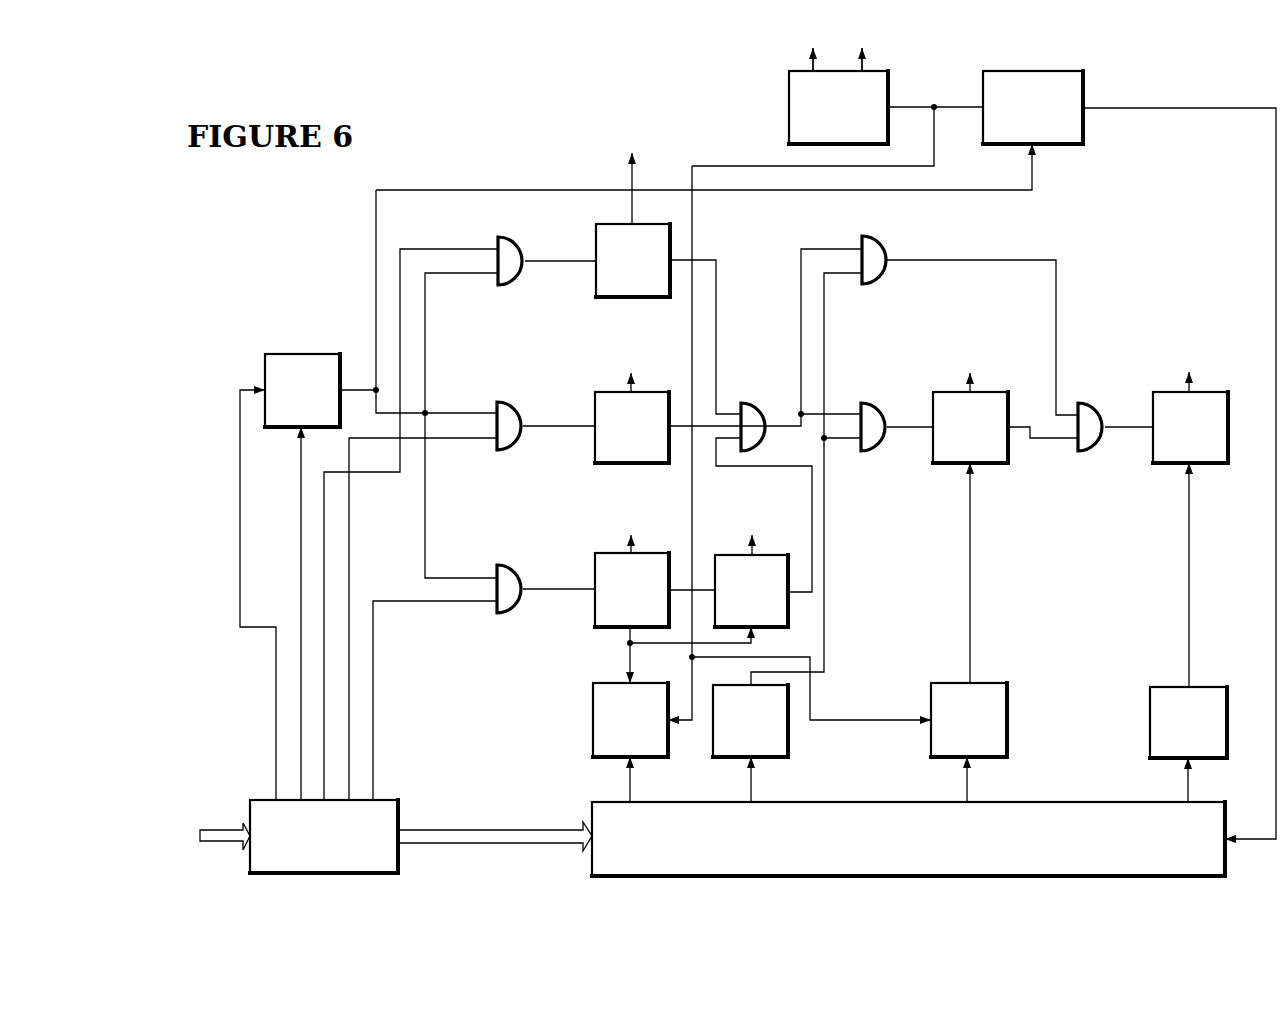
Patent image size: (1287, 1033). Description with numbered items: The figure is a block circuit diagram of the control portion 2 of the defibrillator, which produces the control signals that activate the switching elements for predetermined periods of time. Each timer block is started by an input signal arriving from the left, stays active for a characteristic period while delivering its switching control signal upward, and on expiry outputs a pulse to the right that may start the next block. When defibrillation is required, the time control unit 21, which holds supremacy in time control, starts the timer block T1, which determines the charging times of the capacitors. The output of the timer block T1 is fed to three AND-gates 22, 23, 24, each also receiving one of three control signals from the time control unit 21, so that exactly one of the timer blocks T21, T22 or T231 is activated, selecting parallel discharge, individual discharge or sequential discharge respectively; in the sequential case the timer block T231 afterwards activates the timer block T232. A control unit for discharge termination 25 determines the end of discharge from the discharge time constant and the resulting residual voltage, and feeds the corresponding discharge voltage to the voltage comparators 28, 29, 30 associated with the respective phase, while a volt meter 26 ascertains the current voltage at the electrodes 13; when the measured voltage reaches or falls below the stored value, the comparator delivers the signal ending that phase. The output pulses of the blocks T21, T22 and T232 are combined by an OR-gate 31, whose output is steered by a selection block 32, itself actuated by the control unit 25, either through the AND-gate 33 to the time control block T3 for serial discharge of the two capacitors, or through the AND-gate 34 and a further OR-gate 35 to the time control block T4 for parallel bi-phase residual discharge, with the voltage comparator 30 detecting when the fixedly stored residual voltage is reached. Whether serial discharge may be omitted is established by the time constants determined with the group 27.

The control portion 2 is at (456, 68).
The electrodes 13 is at (837, 51).
The time control unit 21 is at (250, 808).
The AND-gate 22 is at (510, 287).
The AND-gate 23 is at (508, 402).
The AND-gate 24 is at (508, 565).
The control unit for discharge termination 25 is at (593, 812).
The volt meter 26 is at (789, 90).
The group 27 is at (1059, 146).
The voltage comparator 28 is at (593, 718).
The voltage comparator 29 is at (1007, 733).
The voltage comparator 30 is at (1150, 722).
The OR-gate 31 is at (752, 402).
The selection block 32 is at (788, 730).
The AND-gate 33 is at (870, 402).
The AND-gate 34 is at (870, 285).
The OR-gate 35 is at (1092, 402).
The timer block T1 is at (265, 370).
The timer block T21 is at (596, 232).
The timer block T22 is at (595, 455).
The timer block T231 is at (595, 618).
The timer block T232 is at (788, 605).
The time control block T3 is at (948, 463).
The time control block T4 is at (1165, 463).